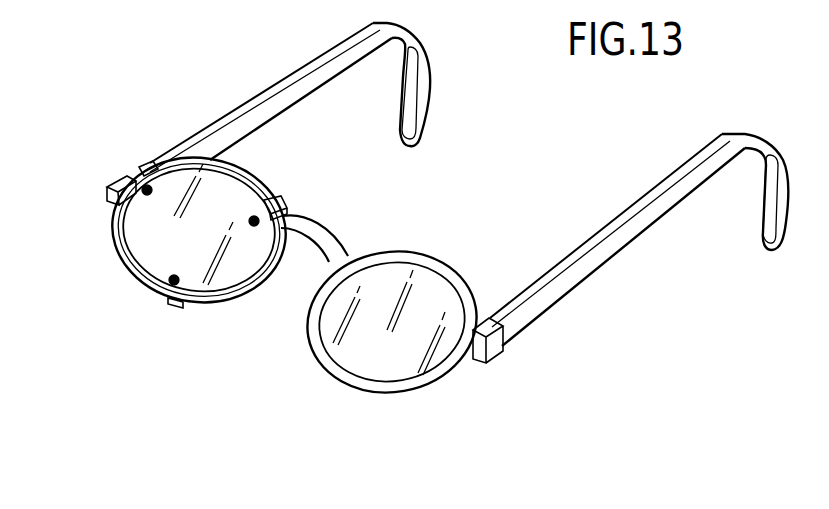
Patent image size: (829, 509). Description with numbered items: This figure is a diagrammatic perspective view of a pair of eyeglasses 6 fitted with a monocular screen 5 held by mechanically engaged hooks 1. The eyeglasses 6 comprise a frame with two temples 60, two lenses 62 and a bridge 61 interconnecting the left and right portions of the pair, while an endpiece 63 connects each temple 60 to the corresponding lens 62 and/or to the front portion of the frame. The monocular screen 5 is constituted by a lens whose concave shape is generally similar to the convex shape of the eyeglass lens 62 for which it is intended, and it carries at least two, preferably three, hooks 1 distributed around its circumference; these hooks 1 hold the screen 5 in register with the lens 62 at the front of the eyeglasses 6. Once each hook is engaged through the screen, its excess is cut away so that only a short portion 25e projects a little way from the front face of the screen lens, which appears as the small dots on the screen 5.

The eyeglasses 6 is at (189, 86).
The temple 60 is at (327, 60).
The endpiece 63 is at (107, 194).
The hook 1 is at (136, 165).
The monocular screen 5 is at (230, 279).
The lens 62 is at (177, 240).
The bridge 61 is at (328, 233).
The projecting portion 25e is at (254, 222).